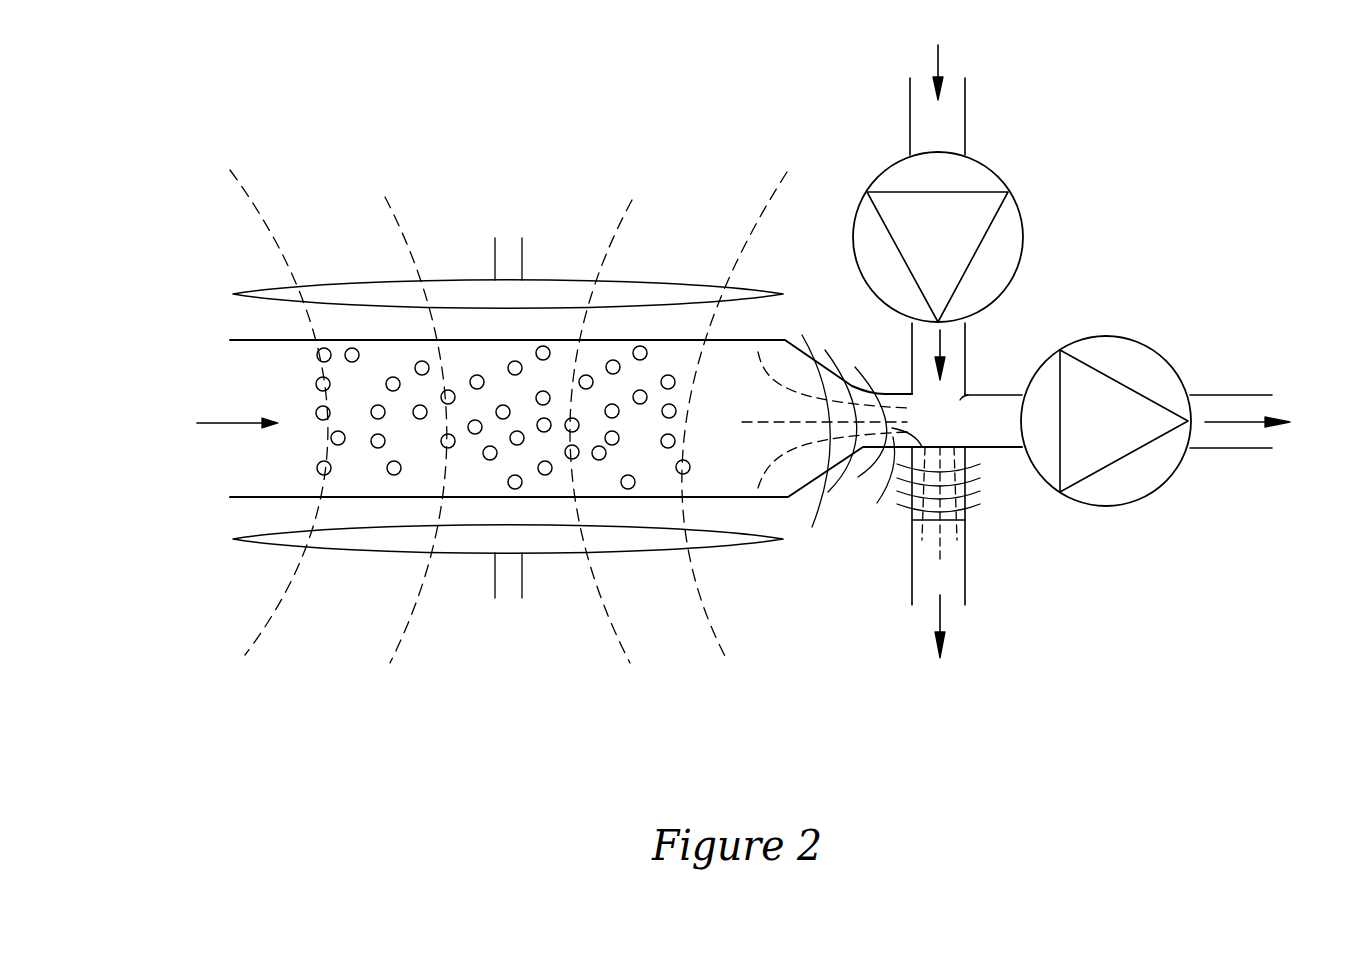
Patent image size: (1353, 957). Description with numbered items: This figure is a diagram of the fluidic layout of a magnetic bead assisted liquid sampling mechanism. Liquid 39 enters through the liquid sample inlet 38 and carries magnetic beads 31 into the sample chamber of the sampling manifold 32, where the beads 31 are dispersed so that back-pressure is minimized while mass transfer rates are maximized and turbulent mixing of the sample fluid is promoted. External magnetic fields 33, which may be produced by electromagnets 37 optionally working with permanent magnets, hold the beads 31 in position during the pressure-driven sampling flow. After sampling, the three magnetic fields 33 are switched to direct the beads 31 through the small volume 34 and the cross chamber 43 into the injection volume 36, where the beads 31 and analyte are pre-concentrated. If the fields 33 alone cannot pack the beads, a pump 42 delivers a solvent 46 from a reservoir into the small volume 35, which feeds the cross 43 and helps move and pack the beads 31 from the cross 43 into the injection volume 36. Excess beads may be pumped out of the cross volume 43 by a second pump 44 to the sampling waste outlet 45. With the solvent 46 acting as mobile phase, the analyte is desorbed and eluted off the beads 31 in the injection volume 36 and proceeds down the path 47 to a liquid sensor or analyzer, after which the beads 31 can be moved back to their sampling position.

The magnetic beads 31 is at (316, 467).
The sampling manifold 32 is at (745, 340).
The external magnetic fields 33 is at (268, 218).
The small volume 34 is at (892, 483).
The small volume 35 is at (963, 335).
The injection volume 36 is at (960, 513).
The electromagnets 37 is at (558, 280).
The liquid sample inlet 38 is at (245, 380).
The liquid 39 is at (372, 488).
The pump 42 is at (990, 165).
The cross 43 is at (967, 390).
The pump 44 is at (1147, 345).
The sampling waste outlet 45 is at (1242, 395).
The solvent 46 is at (940, 58).
The path 47 is at (925, 587).